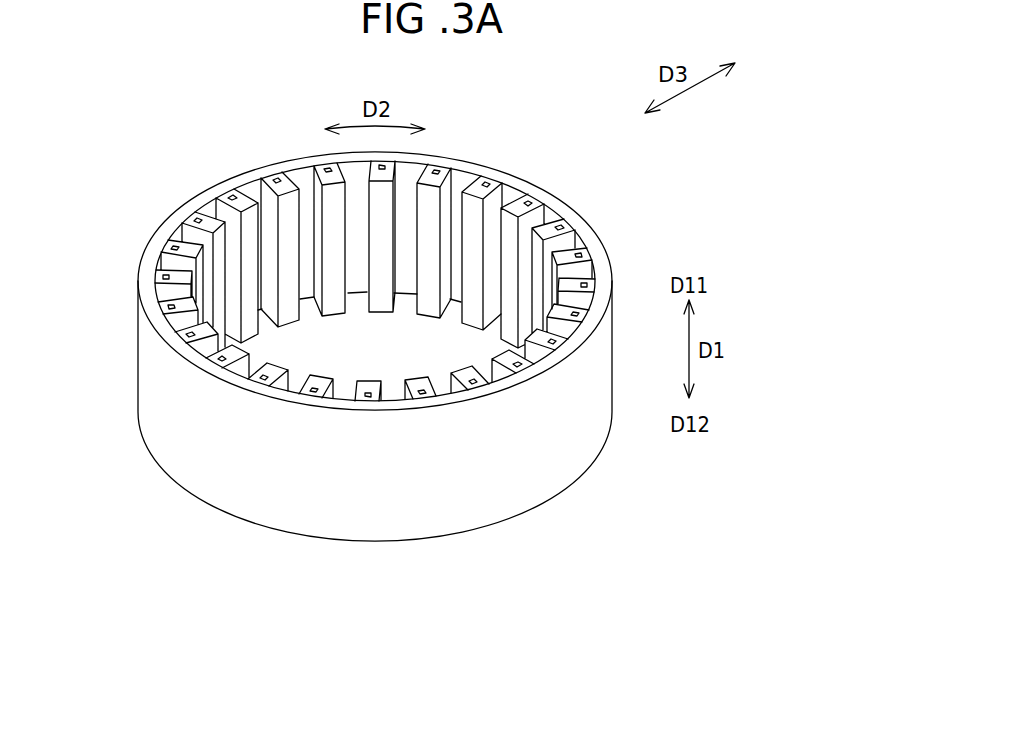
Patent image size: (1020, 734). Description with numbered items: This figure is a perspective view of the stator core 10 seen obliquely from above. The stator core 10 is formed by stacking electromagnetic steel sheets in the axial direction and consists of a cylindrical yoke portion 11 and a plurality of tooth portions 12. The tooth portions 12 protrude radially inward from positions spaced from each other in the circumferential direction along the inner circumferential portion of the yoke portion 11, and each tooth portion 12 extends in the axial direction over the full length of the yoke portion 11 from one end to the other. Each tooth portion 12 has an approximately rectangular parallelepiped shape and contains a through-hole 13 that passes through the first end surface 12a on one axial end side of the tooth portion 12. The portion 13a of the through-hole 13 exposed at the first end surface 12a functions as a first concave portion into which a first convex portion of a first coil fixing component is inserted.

The stator core 10 is at (564, 198).
The yoke portion 11 is at (597, 433).
The tooth portion 12 is at (382, 312).
The first end surface 12a is at (467, 190).
The through-hole 13 is at (583, 252).
The portion of the through-hole exposed to the first end surface 13a is at (578, 255).